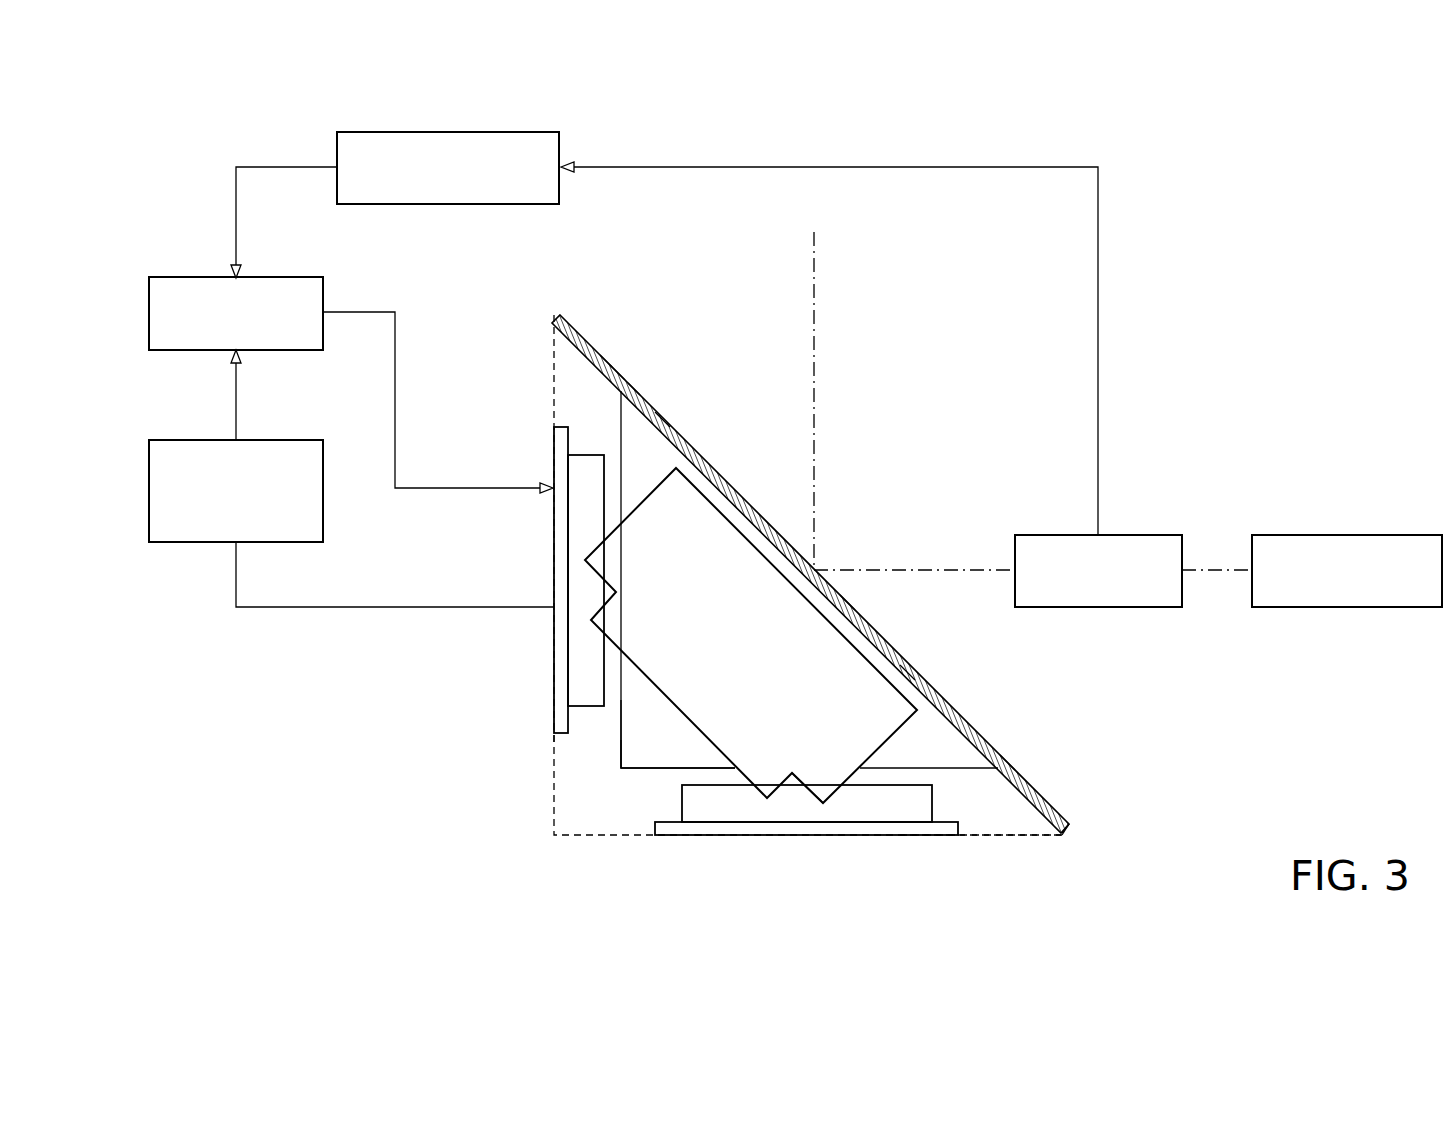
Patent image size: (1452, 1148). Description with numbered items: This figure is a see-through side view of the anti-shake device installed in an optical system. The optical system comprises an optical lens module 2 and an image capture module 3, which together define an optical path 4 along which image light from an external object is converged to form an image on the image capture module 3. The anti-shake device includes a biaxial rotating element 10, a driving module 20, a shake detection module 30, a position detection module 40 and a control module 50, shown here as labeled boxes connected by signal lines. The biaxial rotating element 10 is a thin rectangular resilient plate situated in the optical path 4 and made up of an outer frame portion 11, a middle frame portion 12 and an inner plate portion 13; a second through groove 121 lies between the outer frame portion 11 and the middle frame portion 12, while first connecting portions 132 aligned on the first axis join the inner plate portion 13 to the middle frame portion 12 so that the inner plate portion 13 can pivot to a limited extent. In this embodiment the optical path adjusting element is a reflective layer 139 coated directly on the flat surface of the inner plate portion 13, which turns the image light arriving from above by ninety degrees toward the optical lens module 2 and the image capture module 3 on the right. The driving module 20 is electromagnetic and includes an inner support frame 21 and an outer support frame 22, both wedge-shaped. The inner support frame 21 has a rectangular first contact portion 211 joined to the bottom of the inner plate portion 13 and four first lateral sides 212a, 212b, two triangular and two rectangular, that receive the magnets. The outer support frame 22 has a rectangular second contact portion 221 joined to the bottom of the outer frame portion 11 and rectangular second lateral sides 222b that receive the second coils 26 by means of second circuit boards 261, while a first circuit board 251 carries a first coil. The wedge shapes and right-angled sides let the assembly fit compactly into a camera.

The optical lens module 2 is at (1123, 535).
The image capture module 3 is at (1373, 535).
The optical path 4 is at (816, 326).
The biaxial rotating element 10 is at (1092, 795).
The outer frame portion 11 is at (578, 320).
The middle frame portion 12 is at (618, 365).
The second through groove 121 is at (605, 340).
The inner plate portion 13 is at (652, 412).
The first connecting portion 132 is at (627, 375).
The reflective layer 139 is at (852, 603).
The driving module 20 is at (997, 846).
The inner support frame 21 is at (645, 755).
The first contact portion 211 is at (905, 660).
The first lateral side 212a is at (625, 772).
The first lateral side 212b is at (620, 738).
The outer support frame 22 is at (1027, 837).
The second contact portion 221 is at (1053, 837).
The second lateral side 222b is at (552, 740).
The first circuit board 251 is at (823, 768).
The second coil 26 is at (578, 650).
The second circuit board 261 is at (565, 688).
The shake detection module 30 is at (462, 132).
The position detection module 40 is at (293, 440).
The control module 50 is at (297, 277).